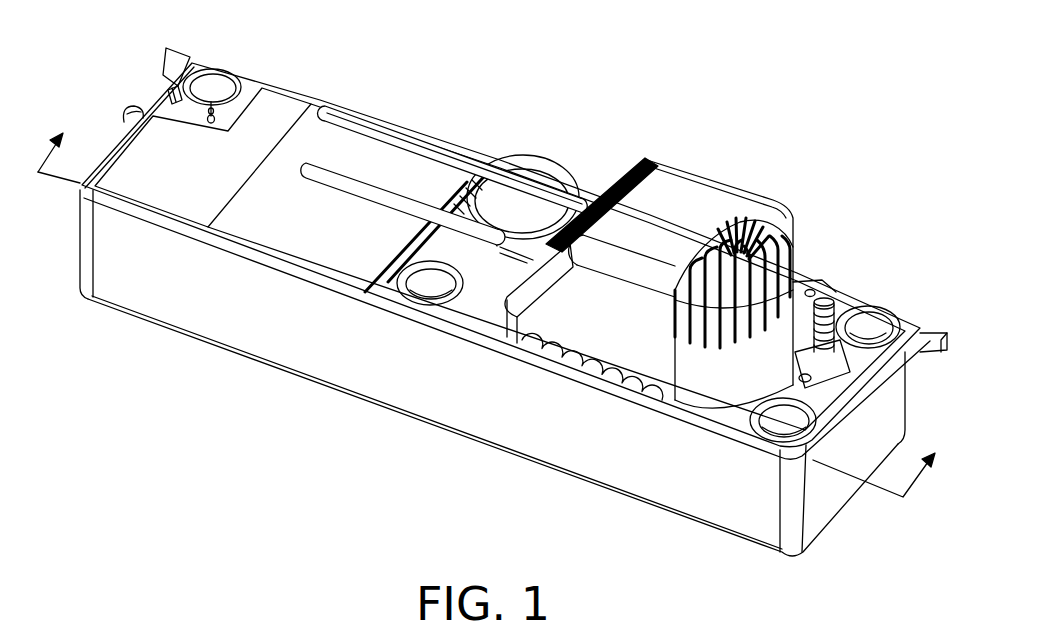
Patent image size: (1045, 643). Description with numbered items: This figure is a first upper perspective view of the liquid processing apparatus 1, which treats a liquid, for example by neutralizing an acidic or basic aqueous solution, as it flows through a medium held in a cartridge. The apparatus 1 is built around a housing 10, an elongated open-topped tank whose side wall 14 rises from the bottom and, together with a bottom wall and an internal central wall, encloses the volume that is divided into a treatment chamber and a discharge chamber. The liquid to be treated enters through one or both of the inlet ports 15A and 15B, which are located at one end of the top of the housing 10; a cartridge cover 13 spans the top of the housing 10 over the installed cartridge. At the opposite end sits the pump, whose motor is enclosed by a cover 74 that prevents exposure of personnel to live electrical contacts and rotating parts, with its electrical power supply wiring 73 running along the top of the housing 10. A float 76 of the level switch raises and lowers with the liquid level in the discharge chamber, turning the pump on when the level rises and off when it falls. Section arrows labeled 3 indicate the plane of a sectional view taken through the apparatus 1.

The apparatus 1 is at (487, 284).
The section line 3- 3 is at (481, 325).
The housing 10 is at (390, 418).
The cartridge cover 13 is at (318, 130).
The side wall 14 is at (576, 457).
The inlet port 15A is at (118, 128).
The inlet port 15B is at (207, 85).
The electrical power supply wiring 73 is at (348, 185).
The cover 74 is at (691, 200).
The float 76 is at (433, 150).